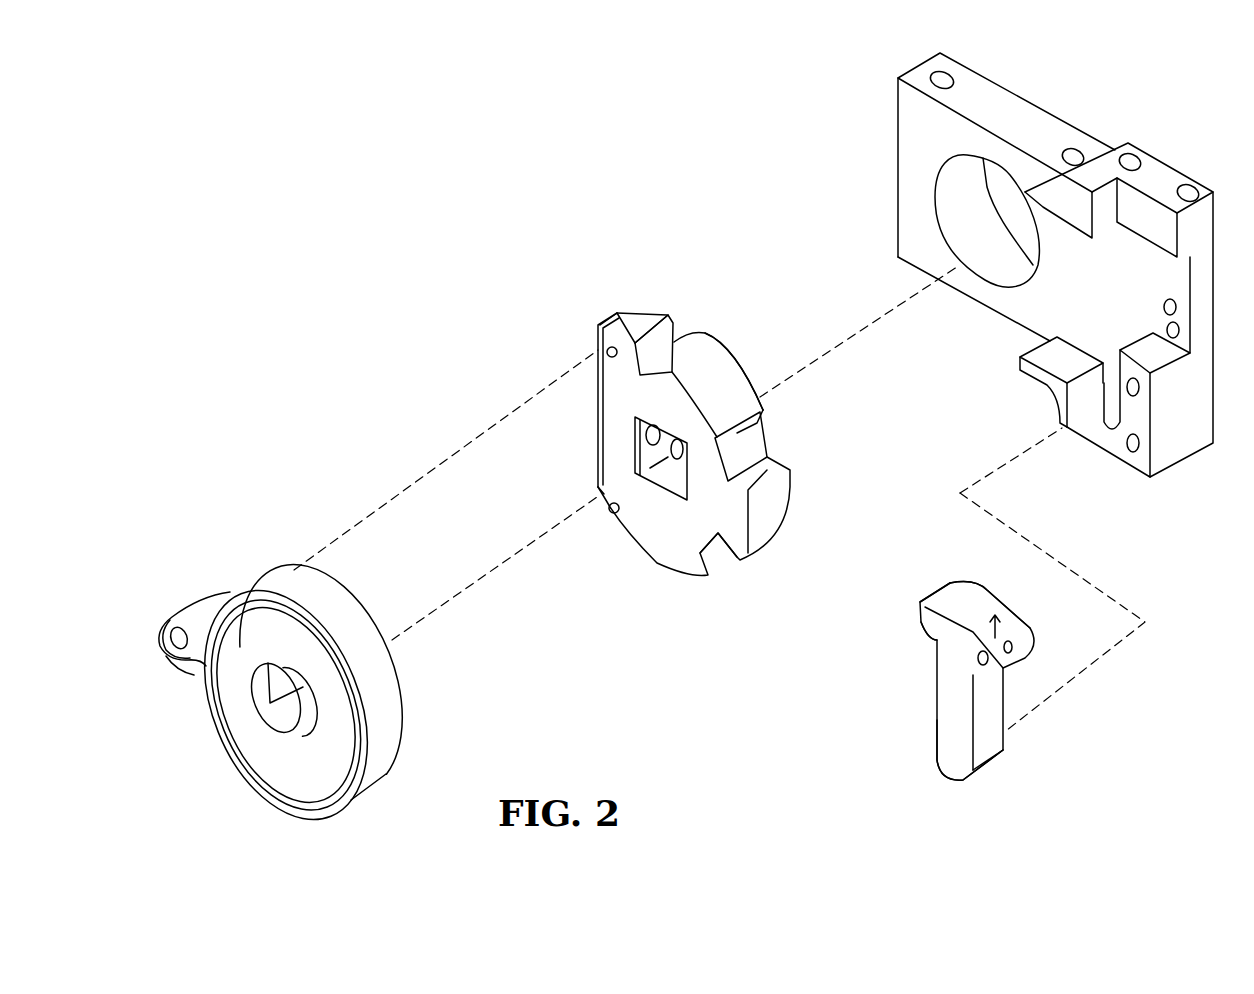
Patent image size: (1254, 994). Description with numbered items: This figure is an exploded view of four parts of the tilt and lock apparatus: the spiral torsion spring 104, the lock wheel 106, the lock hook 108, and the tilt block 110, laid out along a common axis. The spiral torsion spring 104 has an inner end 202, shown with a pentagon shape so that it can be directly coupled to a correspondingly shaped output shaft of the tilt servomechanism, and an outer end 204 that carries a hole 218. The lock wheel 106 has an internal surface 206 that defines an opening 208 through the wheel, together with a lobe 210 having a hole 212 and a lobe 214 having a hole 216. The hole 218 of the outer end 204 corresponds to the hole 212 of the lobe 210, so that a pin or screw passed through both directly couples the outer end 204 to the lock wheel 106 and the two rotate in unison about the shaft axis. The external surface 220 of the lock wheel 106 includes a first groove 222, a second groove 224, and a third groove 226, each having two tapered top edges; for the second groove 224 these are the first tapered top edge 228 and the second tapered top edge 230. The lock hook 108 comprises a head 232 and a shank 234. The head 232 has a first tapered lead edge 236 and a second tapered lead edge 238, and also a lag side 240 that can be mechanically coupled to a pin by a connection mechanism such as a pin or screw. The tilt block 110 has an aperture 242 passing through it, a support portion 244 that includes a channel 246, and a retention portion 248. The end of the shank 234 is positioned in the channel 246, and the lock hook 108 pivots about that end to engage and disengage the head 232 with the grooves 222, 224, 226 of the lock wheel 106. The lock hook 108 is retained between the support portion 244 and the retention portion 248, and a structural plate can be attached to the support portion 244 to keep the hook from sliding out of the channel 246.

The spiral torsion spring 104 is at (342, 618).
The inner end 202 is at (293, 710).
The outer end 204 is at (208, 605).
The hole 218 is at (179, 645).
The lock wheel 106 is at (770, 513).
The first groove 222 is at (682, 327).
The external surface 220 is at (710, 347).
The second groove 224 is at (772, 438).
The first tapered top edge 228 is at (738, 432).
The second tapered top edge 230 is at (787, 467).
The third groove 226 is at (720, 557).
The internal surface 206 is at (652, 460).
The opening 208 is at (680, 470).
The lobe 210 is at (610, 323).
The hole 212 is at (603, 353).
The lobe 214 is at (605, 500).
The hole 216 is at (606, 512).
The tilt block 110 is at (910, 175).
The aperture 242 is at (975, 215).
The retention portion 248 is at (1077, 207).
The support portion 244 is at (1110, 440).
The channel 246 is at (1097, 390).
The lock hook 108 is at (952, 695).
The head 232 is at (957, 595).
The shank 234 is at (952, 725).
The first tapered lead edge 236 is at (927, 600).
The second tapered lead edge 238 is at (923, 637).
The lag side 240 is at (1012, 622).